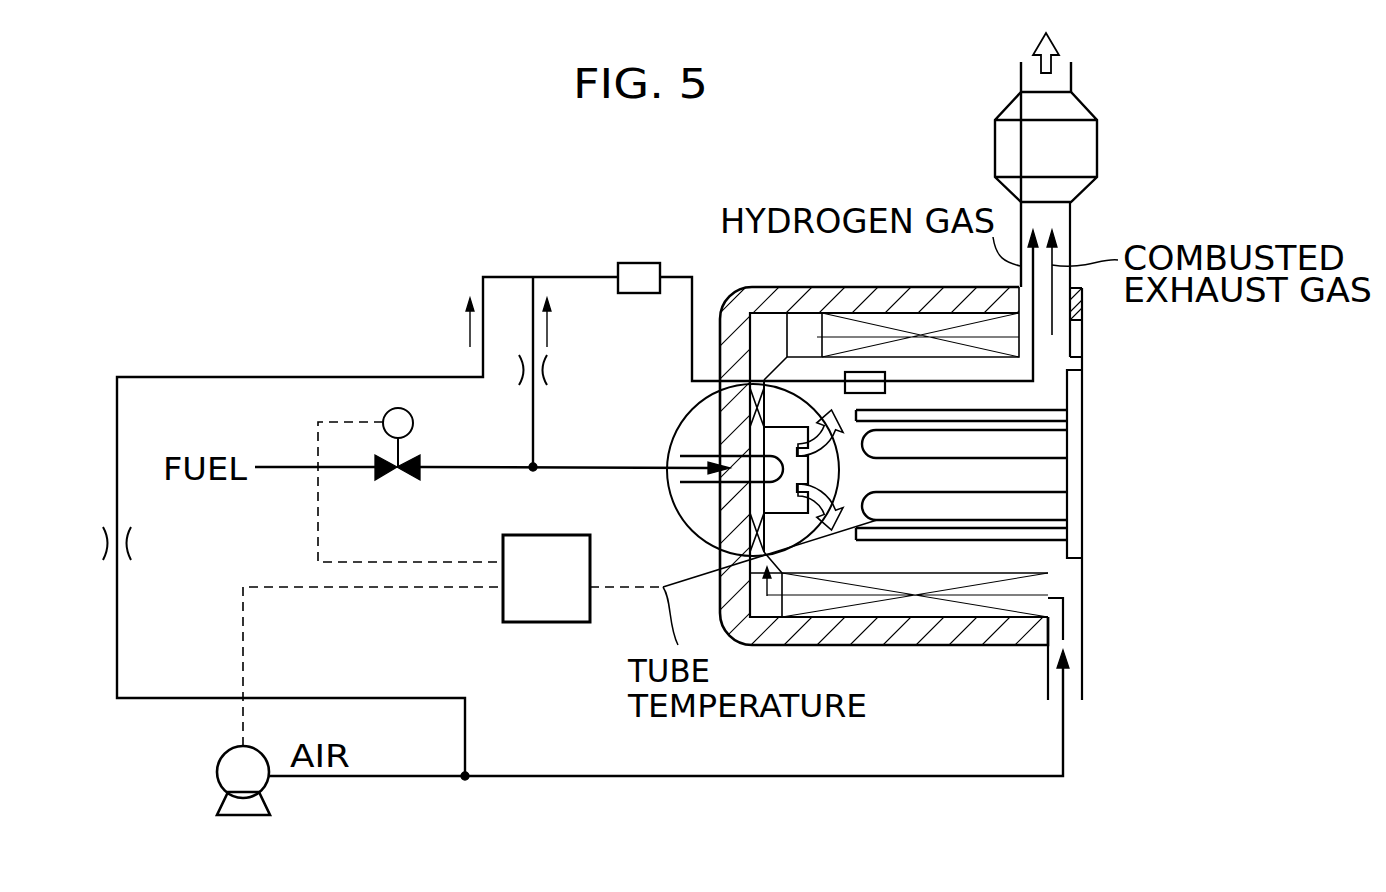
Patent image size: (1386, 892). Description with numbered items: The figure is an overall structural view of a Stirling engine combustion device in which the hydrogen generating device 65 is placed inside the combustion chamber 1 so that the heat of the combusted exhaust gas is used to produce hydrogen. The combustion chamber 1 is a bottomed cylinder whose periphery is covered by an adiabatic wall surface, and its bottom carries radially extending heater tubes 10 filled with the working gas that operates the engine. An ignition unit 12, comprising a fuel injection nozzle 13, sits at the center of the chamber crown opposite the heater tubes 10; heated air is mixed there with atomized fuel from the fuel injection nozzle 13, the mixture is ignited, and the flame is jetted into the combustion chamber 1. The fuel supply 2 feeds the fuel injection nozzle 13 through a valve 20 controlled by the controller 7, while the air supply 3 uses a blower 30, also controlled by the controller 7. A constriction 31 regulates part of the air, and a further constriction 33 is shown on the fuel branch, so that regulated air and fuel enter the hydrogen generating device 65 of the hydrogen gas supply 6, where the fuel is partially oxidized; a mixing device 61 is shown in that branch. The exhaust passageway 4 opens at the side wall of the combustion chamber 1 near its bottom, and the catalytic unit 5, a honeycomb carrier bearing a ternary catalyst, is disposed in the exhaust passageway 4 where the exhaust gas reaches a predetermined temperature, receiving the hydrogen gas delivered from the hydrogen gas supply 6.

The combustion chamber 1 is at (946, 660).
The fuel supply 2 is at (285, 465).
The air supply 3 is at (385, 780).
The exhaust passageway 4 is at (1060, 214).
The catalytic unit 5 is at (1122, 151).
The hydrogen gas supply 6 is at (692, 265).
The controller 7 is at (550, 553).
The heater tubes 10 is at (1053, 505).
The ignition unit 12 is at (672, 542).
The fuel injection nozzle 13 is at (692, 457).
The valve 20 is at (415, 422).
The blower 30 is at (228, 806).
The constriction 31 is at (131, 543).
The flow restrictor 33 is at (548, 368).
The mixing device 61 is at (637, 265).
The hydrogen generating device 65 is at (862, 372).